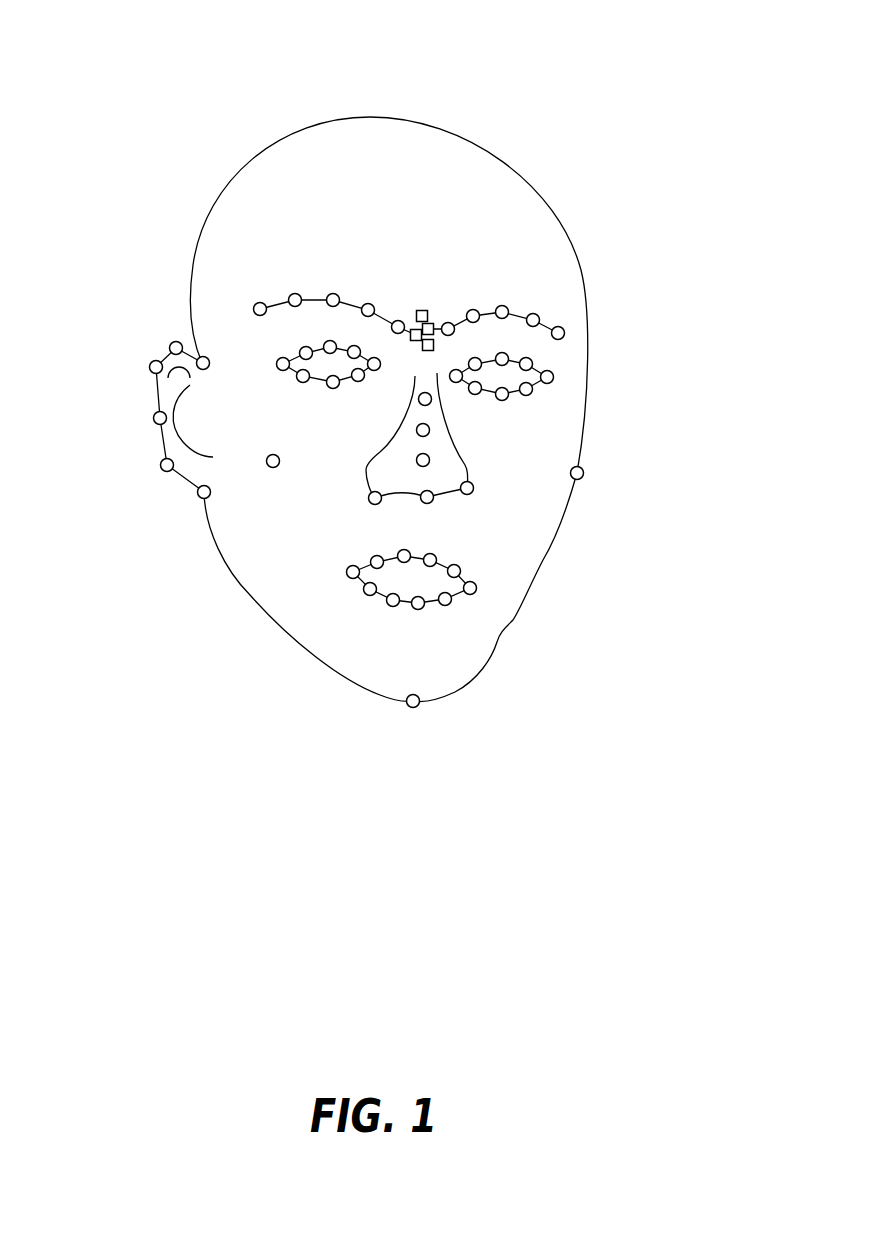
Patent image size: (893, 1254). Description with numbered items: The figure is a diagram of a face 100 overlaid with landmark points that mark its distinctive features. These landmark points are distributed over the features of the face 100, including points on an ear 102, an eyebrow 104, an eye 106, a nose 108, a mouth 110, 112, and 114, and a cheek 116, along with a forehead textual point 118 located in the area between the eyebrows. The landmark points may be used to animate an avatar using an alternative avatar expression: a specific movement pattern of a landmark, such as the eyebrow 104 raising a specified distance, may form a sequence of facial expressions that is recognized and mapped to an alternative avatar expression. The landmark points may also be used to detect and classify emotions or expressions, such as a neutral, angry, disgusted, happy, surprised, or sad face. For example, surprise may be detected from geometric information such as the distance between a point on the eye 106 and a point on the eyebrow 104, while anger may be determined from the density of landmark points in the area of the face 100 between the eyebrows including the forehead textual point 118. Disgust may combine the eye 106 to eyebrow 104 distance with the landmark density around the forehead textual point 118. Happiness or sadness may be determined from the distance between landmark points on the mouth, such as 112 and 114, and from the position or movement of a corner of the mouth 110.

The face 100 is at (636, 52).
The ear 102 is at (153, 360).
The eyebrow 104 is at (256, 303).
The eye 106 is at (280, 359).
The nose 108 is at (472, 478).
The mouth 110 is at (474, 586).
The mouth 112 is at (435, 550).
The mouth 114 is at (417, 610).
The cheek 116 is at (581, 468).
The forehead textual point 118 is at (425, 309).